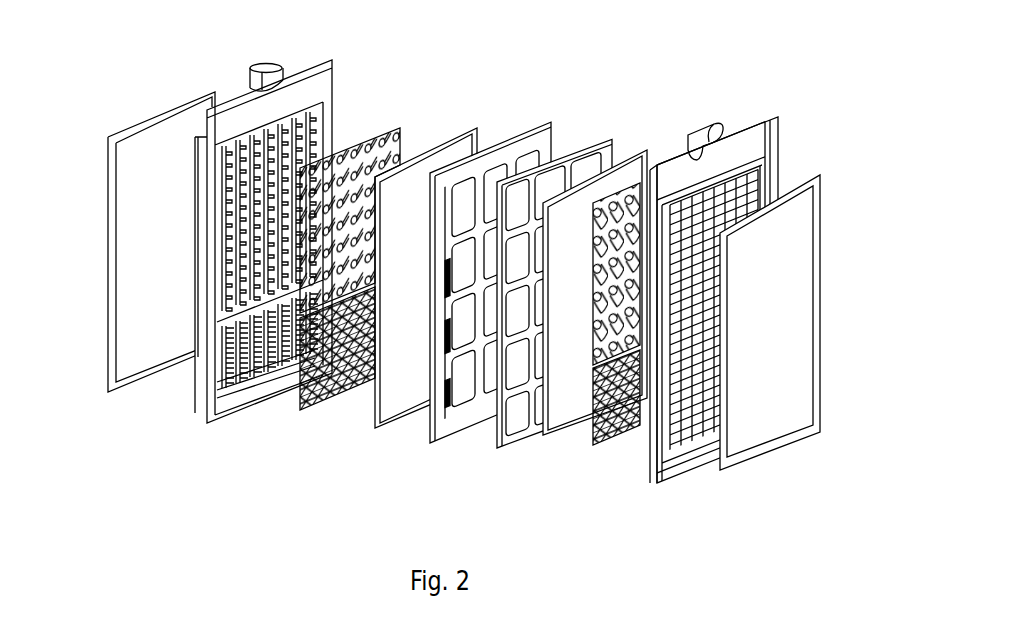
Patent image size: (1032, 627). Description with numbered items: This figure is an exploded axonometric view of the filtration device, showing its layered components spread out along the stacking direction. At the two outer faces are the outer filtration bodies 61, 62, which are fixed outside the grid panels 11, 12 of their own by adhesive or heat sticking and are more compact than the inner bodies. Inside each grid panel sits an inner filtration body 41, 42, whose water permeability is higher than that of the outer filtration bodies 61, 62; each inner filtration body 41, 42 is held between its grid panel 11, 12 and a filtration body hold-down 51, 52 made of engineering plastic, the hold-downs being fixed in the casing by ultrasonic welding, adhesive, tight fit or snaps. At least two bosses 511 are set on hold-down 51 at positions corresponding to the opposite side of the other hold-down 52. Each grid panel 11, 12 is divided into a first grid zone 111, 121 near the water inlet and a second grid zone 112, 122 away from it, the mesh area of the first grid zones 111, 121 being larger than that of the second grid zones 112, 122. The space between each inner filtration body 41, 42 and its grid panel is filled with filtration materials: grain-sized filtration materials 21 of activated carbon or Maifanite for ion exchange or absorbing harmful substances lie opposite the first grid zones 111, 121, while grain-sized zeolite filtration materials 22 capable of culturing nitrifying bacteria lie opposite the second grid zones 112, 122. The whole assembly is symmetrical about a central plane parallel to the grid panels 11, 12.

The grid panel 11 is at (250, 115).
The grid panel 12 is at (725, 279).
The grain-sized filtration materials for ion exchange or absorbing harmful substance 21 is at (377, 138).
The grain-sized filtration materials capable of culturing nitrifying bacteria 22 is at (333, 385).
The inner filtration body 41 is at (447, 160).
The inner filtration body 42 is at (648, 153).
The filtration body hold-down 51 is at (447, 259).
The filtration body hold-down 52 is at (602, 147).
The outer filtration body 61 is at (150, 147).
The outer filtration body 62 is at (752, 340).
The first grid zone 111 is at (235, 285).
The second grid zone 112 is at (252, 355).
The first grid zone 121 is at (740, 182).
The second grid zone 122 is at (694, 452).
The bosses 511 is at (447, 333).